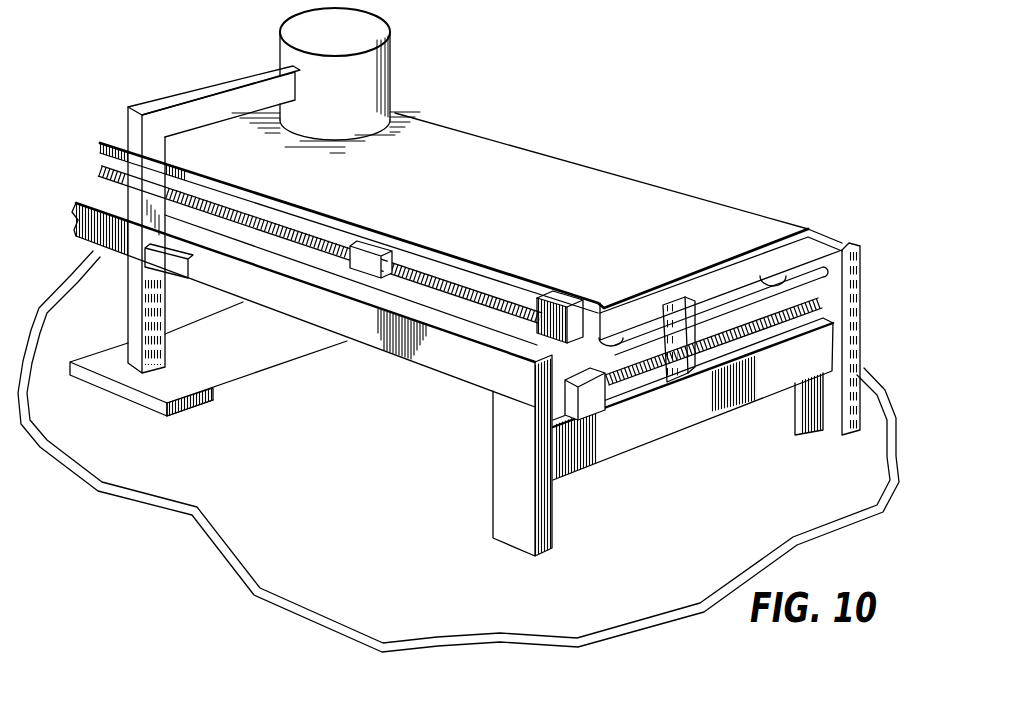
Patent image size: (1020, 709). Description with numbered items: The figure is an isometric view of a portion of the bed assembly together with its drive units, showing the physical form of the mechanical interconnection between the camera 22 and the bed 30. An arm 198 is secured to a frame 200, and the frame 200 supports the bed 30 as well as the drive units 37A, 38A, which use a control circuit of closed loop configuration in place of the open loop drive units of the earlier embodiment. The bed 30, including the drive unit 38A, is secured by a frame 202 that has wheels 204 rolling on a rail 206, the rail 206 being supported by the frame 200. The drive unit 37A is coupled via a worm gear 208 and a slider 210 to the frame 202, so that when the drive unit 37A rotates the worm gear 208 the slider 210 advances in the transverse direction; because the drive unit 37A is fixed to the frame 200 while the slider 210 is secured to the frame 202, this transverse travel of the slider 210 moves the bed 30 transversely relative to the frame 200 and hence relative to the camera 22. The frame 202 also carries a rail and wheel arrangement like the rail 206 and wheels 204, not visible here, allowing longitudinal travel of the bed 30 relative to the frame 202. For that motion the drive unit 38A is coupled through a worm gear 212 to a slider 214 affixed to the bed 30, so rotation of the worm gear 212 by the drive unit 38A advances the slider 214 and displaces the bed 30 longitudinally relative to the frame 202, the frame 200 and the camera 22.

The camera 22 is at (388, 82).
The arm 198 is at (222, 83).
The bed 30 is at (573, 171).
The frame 200 is at (387, 357).
The frame 202 is at (792, 250).
The wheels 204 is at (773, 272).
The rail 206 is at (827, 272).
The worm gear 208 is at (838, 316).
The slider 210 is at (690, 380).
The worm gear 212 is at (446, 280).
The slider 214 is at (372, 244).
The drive unit 37A is at (599, 421).
The drive unit 38A is at (565, 314).